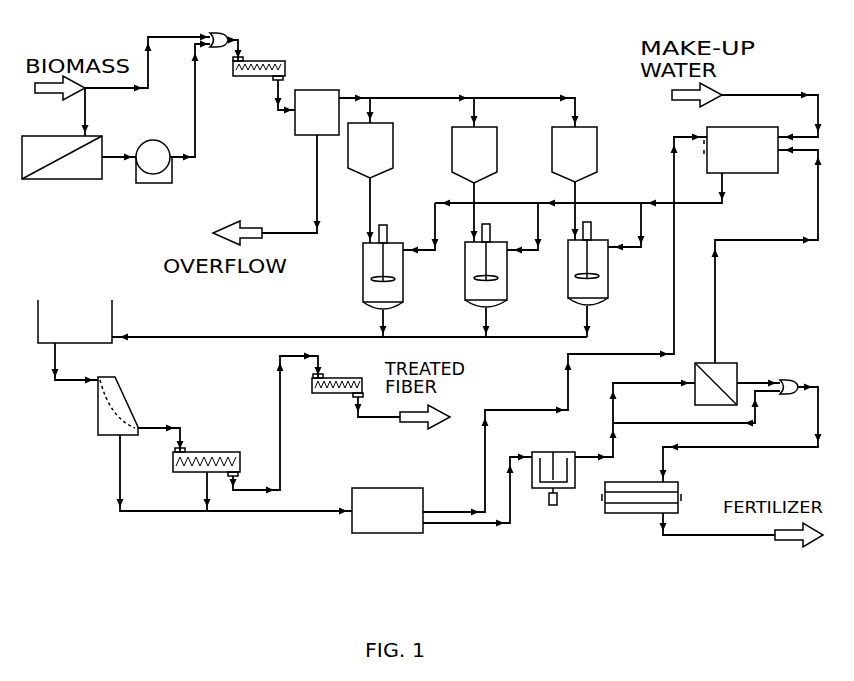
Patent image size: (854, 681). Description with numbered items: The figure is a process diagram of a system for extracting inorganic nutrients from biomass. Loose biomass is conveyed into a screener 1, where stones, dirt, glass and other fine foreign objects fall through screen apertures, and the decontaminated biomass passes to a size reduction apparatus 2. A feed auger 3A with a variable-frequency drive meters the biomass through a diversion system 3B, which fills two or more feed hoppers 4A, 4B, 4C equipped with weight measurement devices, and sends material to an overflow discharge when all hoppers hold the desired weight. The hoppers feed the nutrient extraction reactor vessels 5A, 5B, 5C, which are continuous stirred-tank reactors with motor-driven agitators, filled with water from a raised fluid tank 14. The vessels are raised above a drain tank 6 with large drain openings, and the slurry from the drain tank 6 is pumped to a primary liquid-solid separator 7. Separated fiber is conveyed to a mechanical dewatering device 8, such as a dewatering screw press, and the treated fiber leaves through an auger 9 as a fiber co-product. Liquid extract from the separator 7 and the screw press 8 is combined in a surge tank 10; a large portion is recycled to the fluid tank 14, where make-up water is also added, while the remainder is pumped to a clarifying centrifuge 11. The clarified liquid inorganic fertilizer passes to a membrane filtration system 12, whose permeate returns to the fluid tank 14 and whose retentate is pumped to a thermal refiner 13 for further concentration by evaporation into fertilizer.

The screener 1 is at (62, 177).
The size reduction apparatus 2 is at (154, 179).
The feed auger 3A is at (236, 102).
The diversion system 3B is at (333, 123).
The feed hopper 4A is at (355, 159).
The feed hopper 4B is at (458, 159).
The feed hopper 4C is at (559, 160).
The nutrient extraction reactor vessel 5A is at (327, 285).
The nutrient extraction reactor vessel 5B is at (425, 285).
The nutrient extraction reactor vessel 5C is at (558, 285).
The drain tank 6 is at (85, 331).
The primary liquid-solid separator 7 is at (73, 419).
The mechanical dewatering device 8 is at (217, 446).
The auger 9 is at (327, 418).
The surge tank 10 is at (372, 521).
The clarifying centrifuge 11 is at (542, 536).
The membrane filtration system 12 is at (726, 371).
The thermal refiner 13 is at (652, 540).
The fluid tank 14 is at (757, 159).